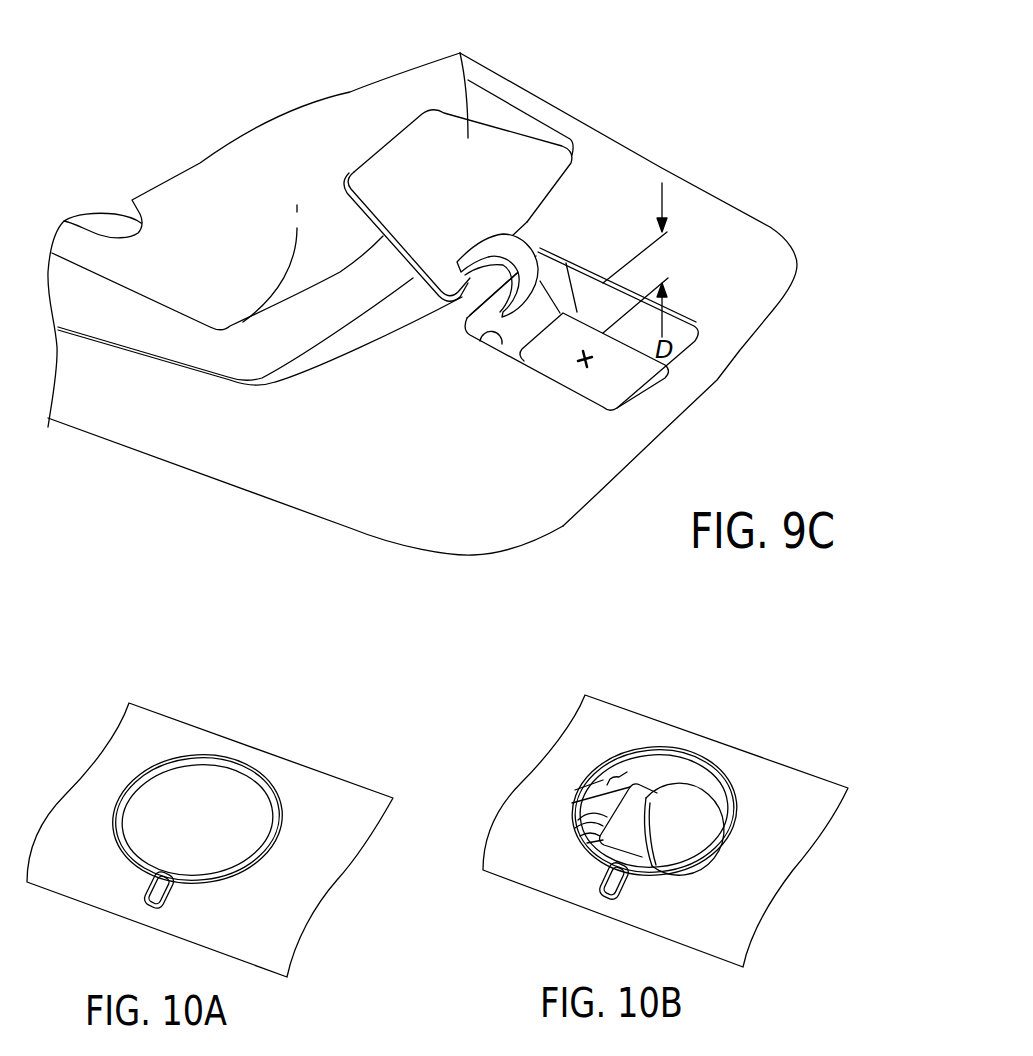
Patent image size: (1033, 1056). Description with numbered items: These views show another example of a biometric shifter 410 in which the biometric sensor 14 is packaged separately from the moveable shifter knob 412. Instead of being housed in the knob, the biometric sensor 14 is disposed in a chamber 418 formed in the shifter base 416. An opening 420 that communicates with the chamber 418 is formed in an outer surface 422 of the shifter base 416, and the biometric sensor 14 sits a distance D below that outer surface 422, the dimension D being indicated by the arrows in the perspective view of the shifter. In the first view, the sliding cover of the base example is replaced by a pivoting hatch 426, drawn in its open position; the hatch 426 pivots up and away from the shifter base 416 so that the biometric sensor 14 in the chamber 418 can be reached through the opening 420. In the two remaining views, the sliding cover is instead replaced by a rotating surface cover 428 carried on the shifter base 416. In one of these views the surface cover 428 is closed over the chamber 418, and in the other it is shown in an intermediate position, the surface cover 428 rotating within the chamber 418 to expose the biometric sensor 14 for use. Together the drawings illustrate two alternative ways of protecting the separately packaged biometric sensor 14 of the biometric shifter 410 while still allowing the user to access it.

In FIG. 9C, the biometric shifter 410 is at (645, 72).
In FIG. 9C, the shifter knob 412 is at (443, 88).
In FIG. 9C, the shifter base 416 is at (730, 230).
In FIG. 10A, the shifter base 416 is at (333, 805).
In FIG. 10B, the shifter base 416 is at (763, 767).
In FIG. 9C, the chamber 418 is at (493, 335).
In FIG. 10B, the chamber 418 is at (617, 778).
In FIG. 9C, the opening 420 is at (560, 264).
In FIG. 9C, the outer surface 422 is at (273, 460).
In FIG. 9C, the pivoting hatch 426 is at (395, 175).
In FIG. 10A, the rotating surface cover 428 is at (200, 795).
In FIG. 10B, the rotating surface cover 428 is at (713, 803).
In FIG. 9C, the biometric sensor 14 is at (563, 367).
In FIG. 10B, the biometric sensor 14 is at (633, 823).